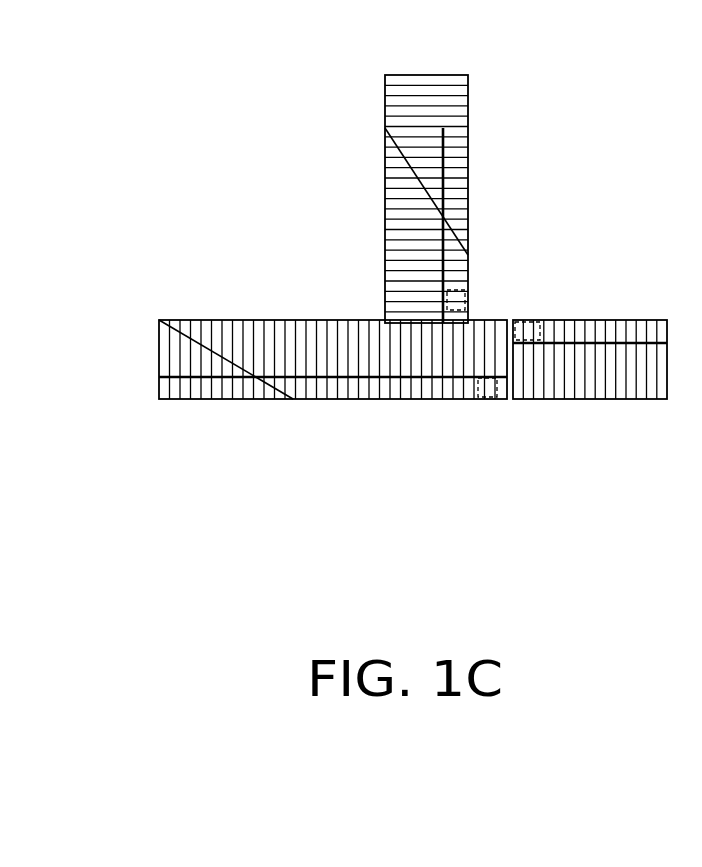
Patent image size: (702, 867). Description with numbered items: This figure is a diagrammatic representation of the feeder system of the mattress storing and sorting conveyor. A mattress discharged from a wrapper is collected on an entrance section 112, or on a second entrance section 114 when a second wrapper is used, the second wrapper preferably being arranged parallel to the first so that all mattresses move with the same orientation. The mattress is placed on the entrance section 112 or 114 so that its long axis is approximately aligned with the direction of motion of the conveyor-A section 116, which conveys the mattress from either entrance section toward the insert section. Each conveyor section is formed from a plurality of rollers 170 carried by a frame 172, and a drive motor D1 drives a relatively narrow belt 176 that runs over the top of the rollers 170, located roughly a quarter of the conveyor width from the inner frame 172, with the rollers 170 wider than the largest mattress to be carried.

The entrance section 114 is at (478, 118).
The conveyor-A section 116 is at (391, 400).
The entrance section 112 is at (620, 400).
The rollers 170 is at (462, 242).
The frame 172 is at (468, 205).
The belt 176 is at (445, 165).
The drive motor D1 is at (483, 398).